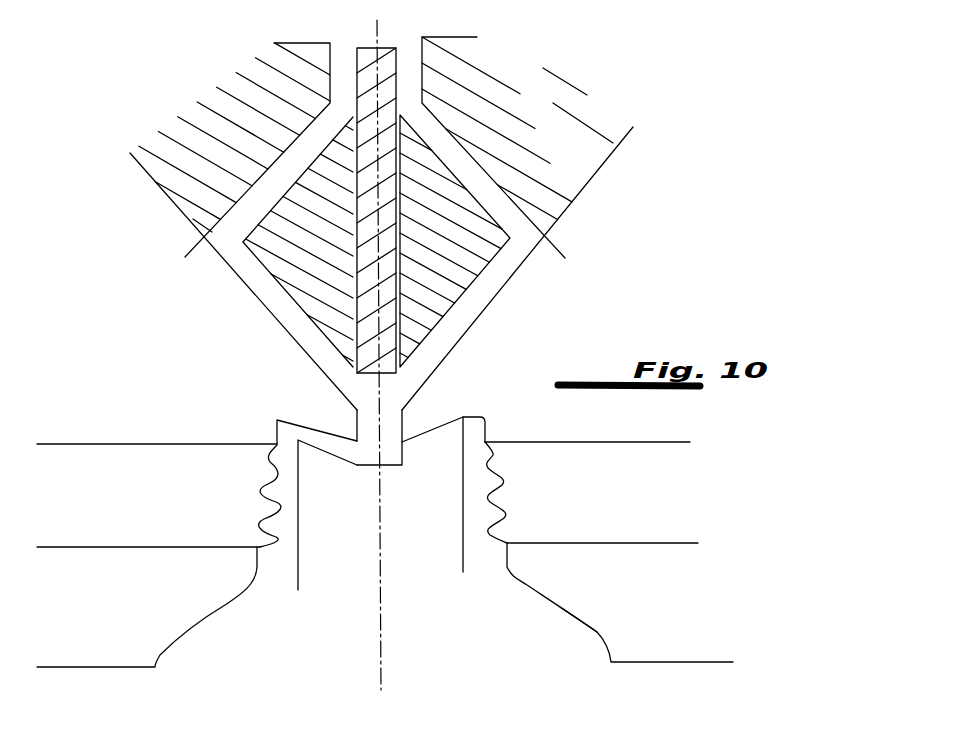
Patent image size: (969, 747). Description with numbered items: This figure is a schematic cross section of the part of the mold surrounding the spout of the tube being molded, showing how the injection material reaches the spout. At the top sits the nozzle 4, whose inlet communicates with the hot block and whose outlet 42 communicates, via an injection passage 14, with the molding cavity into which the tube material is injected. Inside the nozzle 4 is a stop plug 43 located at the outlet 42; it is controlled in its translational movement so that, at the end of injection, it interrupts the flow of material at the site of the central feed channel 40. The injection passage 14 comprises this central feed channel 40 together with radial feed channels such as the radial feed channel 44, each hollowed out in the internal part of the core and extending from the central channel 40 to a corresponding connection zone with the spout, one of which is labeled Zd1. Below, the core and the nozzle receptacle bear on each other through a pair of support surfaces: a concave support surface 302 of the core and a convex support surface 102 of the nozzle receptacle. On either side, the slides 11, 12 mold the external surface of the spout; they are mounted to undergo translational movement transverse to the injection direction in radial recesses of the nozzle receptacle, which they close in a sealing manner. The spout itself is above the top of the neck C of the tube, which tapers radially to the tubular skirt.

The nozzle 4 is at (287, 250).
The stop plug 43 is at (395, 203).
The outlet of the nozzle 42 is at (523, 230).
The injection passage 14 is at (462, 315).
The central feed channel 40 is at (357, 412).
The convex support surface 102 is at (433, 420).
The radial feed channel 44 is at (341, 448).
The concave support surface 302 is at (430, 425).
The slide 11 is at (159, 555).
The slide 12 is at (609, 552).
The neck C is at (597, 630).
The zone of connection Zd1 is at (277, 423).